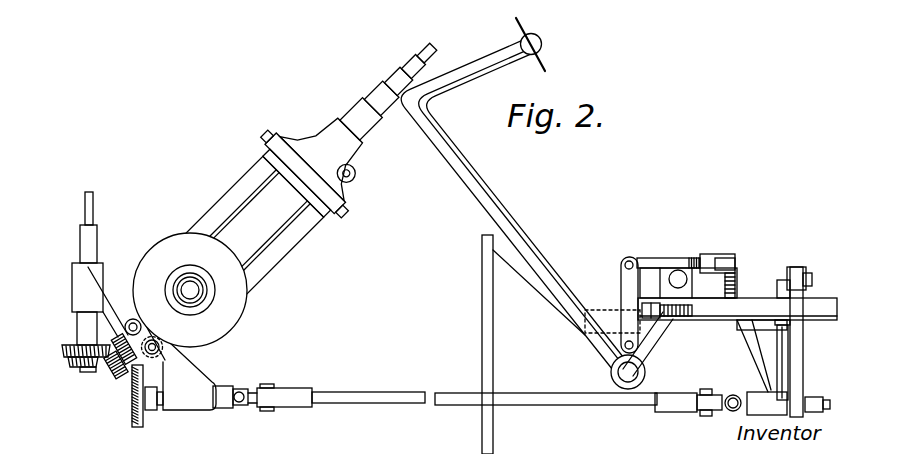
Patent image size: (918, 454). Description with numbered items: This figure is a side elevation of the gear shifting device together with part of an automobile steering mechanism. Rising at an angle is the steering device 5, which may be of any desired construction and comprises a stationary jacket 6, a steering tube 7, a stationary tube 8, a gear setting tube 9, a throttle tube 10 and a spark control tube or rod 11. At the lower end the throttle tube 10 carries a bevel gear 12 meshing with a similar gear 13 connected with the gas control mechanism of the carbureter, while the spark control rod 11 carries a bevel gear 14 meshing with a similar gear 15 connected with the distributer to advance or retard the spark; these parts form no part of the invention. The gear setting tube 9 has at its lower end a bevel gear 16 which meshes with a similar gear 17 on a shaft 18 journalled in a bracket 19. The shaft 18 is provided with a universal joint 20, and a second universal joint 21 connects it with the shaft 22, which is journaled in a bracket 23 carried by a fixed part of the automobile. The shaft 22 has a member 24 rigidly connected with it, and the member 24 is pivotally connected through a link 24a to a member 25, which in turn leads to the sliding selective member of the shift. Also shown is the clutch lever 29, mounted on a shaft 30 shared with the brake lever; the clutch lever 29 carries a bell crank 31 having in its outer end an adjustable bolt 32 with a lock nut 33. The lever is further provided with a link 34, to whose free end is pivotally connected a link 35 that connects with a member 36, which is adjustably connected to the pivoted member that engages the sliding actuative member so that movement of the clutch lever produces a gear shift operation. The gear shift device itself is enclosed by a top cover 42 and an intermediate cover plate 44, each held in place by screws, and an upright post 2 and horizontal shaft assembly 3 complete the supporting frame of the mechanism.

The supporting post 2 is at (507, 325).
The horizontal shaft assembly 3 is at (737, 276).
The steering device 5 is at (260, 217).
The stationary jacket 6 is at (317, 133).
The steering tube 7 is at (349, 110).
The stationary tube 8 is at (372, 91).
The gear setting tube 9 is at (391, 75).
The throttle tube 10 is at (408, 62).
The spark control tube or rod 11 is at (423, 51).
The bevel gear 12 is at (128, 373).
The gear 13 is at (75, 350).
The bevel gear 14 is at (115, 370).
The gear 15 is at (80, 368).
The bevel gear 16 is at (121, 333).
The gear 17 is at (137, 420).
The shaft 18 is at (447, 407).
The bracket 19 is at (193, 410).
The universal joint 20 is at (248, 404).
The second universal joint 21 is at (705, 403).
The shaft 22 is at (742, 410).
The bracket 23 is at (768, 395).
The member 24 is at (803, 355).
The link 24a is at (798, 267).
The member 25 is at (812, 284).
The clutch lever 29 is at (493, 206).
The shaft 30 is at (611, 373).
The bell crank 31 is at (655, 343).
The adjustable bolt 32 is at (677, 316).
The lock nut 33 is at (673, 320).
The link 34 is at (622, 283).
The link 35 is at (658, 264).
The member 36 is at (737, 264).
The top cover 42 is at (780, 276).
The intermediate cover plate 44 is at (612, 311).